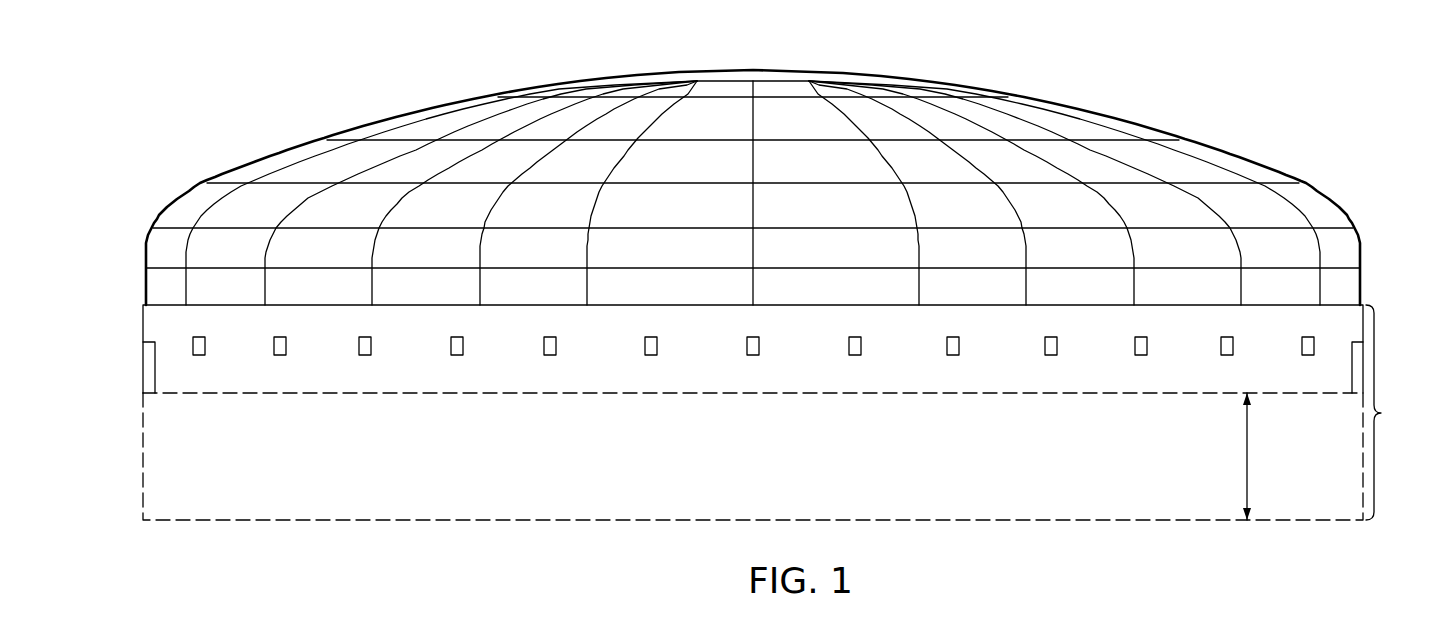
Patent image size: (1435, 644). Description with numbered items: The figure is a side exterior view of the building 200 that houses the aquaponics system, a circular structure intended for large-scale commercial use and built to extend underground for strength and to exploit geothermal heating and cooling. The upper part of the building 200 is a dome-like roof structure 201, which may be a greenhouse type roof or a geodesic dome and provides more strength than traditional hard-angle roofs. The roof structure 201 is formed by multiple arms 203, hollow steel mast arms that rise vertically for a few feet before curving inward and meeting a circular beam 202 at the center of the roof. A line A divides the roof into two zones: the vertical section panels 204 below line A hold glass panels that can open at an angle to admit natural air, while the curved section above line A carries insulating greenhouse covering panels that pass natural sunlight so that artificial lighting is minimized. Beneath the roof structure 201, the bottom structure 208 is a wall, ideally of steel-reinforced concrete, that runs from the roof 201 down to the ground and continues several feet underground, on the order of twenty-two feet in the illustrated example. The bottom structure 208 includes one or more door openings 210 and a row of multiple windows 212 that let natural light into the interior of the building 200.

The building 200 is at (711, 157).
The roof structure 201 is at (1225, 148).
The circular beam 202 is at (750, 70).
The arms 203 is at (350, 170).
The vertical section panels 204 is at (165, 251).
The bottom structure 208 is at (741, 339).
The door openings 210 is at (146, 368).
The windows 212 is at (1141, 337).
The line A is at (177, 217).